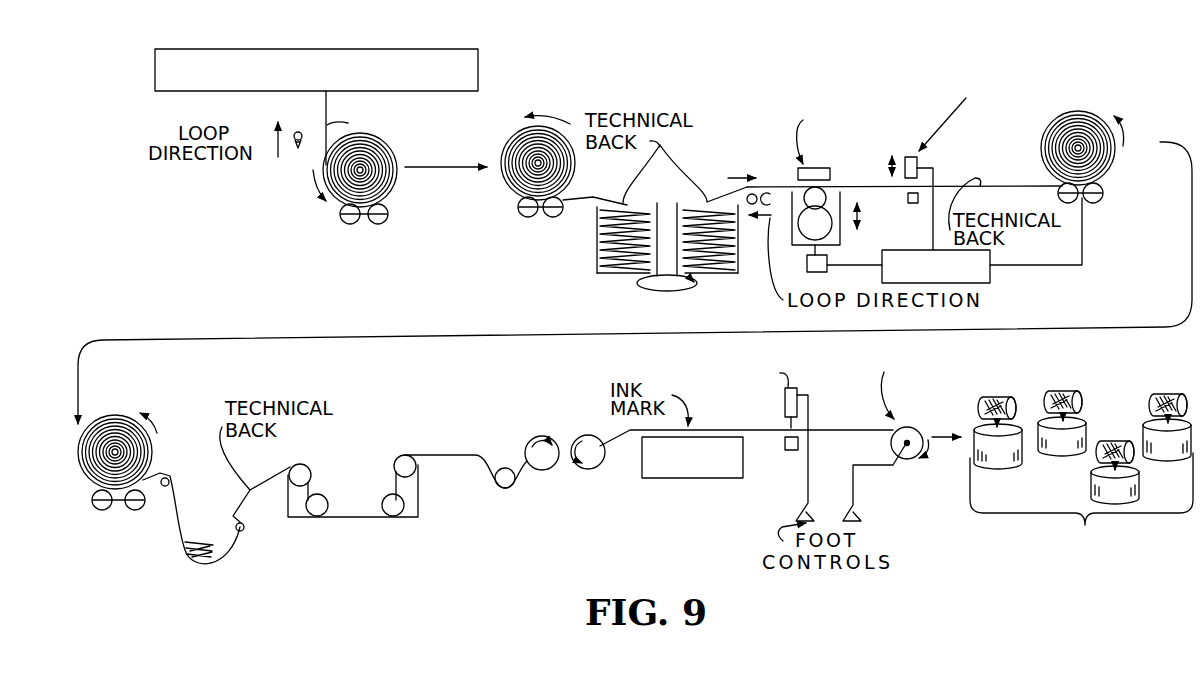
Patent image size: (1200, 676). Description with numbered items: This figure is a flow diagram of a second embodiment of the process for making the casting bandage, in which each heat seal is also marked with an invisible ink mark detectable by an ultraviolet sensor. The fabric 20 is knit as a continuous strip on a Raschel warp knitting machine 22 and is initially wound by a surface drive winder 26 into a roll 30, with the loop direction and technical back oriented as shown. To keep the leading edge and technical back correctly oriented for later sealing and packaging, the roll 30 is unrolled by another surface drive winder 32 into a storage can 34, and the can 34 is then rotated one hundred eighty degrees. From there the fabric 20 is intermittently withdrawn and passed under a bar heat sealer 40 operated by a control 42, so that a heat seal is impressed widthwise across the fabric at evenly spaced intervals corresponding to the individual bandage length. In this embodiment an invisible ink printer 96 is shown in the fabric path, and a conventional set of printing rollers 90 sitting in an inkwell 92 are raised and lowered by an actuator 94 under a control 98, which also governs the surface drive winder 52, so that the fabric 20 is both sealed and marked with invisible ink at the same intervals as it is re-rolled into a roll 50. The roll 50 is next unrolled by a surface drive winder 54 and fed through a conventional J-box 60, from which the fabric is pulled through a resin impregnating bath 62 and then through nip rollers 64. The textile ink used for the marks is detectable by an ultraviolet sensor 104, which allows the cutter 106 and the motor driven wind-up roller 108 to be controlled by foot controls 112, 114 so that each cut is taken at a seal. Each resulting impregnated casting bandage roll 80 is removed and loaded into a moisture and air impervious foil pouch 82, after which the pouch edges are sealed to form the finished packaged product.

The warp knitting machine 22 is at (155, 66).
The fabric 20 is at (326, 106).
The roll 30 is at (396, 160).
The surface drive winder 26 is at (390, 213).
The surface drive winder 32 is at (522, 214).
The storage can 34 is at (597, 258).
The invisible ink printer 96 is at (798, 172).
The bar heat sealer 40 is at (918, 162).
The control 42 is at (913, 204).
The printing rollers 90 is at (836, 230).
The inkwell 92 is at (808, 245).
The actuator 94 is at (827, 268).
The control 98 is at (1000, 274).
The roll 50 is at (1044, 139).
The surface drive winder 52 is at (1103, 198).
The surface drive winder 54 is at (135, 510).
The J-box 60 is at (178, 558).
The resin impregnating bath 62 is at (420, 495).
The nip rollers 64 is at (568, 434).
The ultraviolet sensor 104 is at (680, 480).
The cutter 106 is at (785, 405).
The wind-up roller 108 is at (891, 446).
The foot control 112 is at (797, 514).
The foot control 114 is at (858, 505).
The impregnated casting bandage roll 80 is at (1003, 395).
The foil pouch 82 is at (1012, 464).